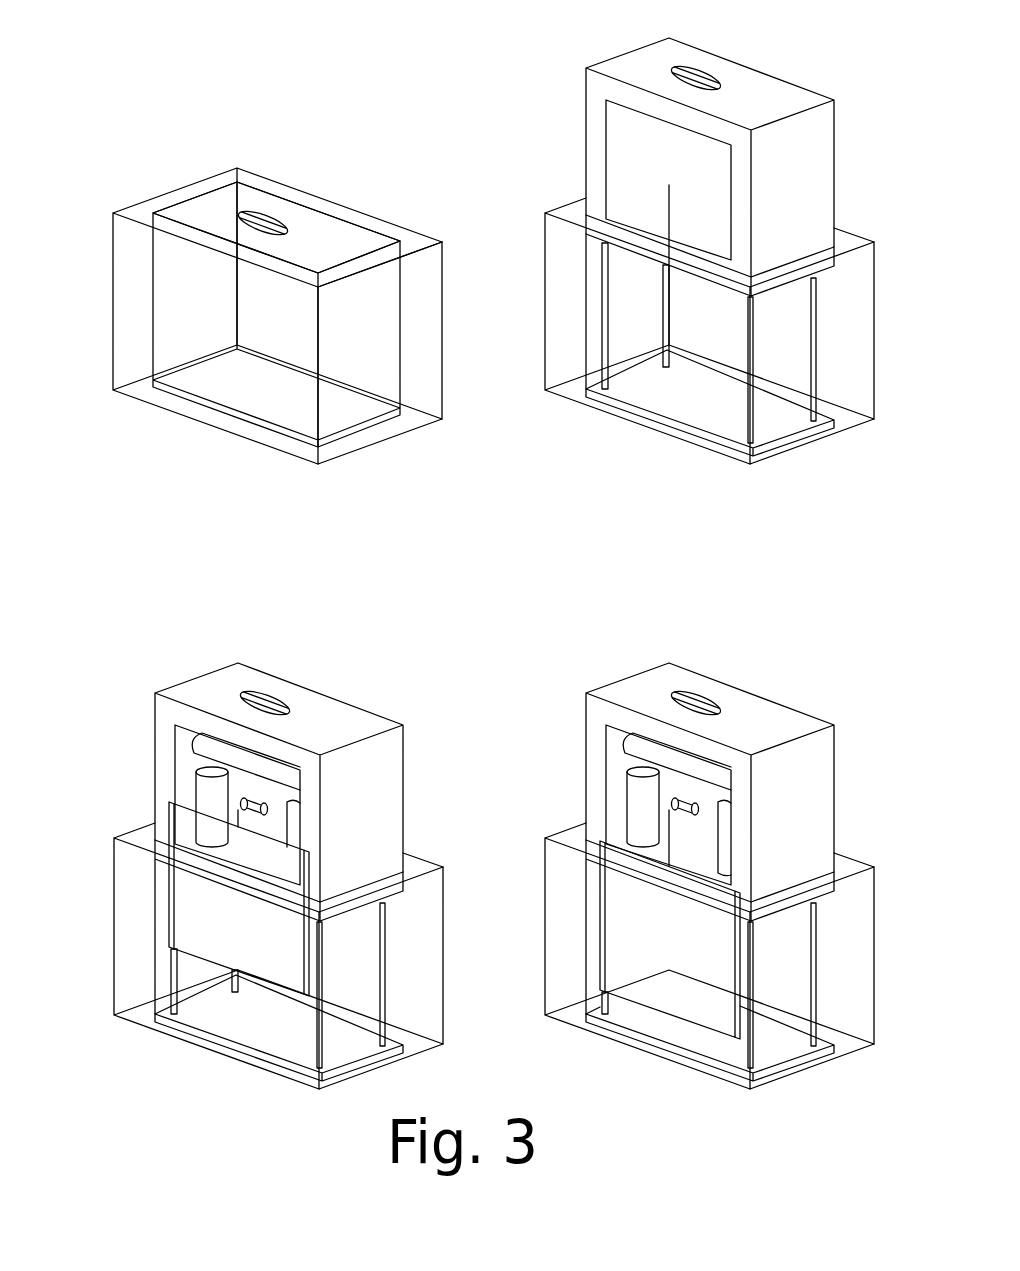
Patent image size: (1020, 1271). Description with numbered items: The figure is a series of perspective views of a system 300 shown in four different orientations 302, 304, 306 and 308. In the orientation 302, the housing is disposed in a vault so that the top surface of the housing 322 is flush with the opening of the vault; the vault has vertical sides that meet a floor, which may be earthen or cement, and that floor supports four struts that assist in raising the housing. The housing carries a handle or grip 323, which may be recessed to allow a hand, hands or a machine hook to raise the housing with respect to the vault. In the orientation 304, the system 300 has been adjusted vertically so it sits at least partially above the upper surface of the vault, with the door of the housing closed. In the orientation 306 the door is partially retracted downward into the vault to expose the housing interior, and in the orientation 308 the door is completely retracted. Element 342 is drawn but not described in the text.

The system 300 is at (462, 546).
The orientation 302 is at (310, 319).
The orientation 304 is at (677, 278).
The orientation 306 is at (280, 843).
The orientation 308 is at (677, 843).
The top surface of the housing 322 is at (276, 212).
The handle or grip 323 is at (291, 180).
The guide rail 342 is at (541, 267).